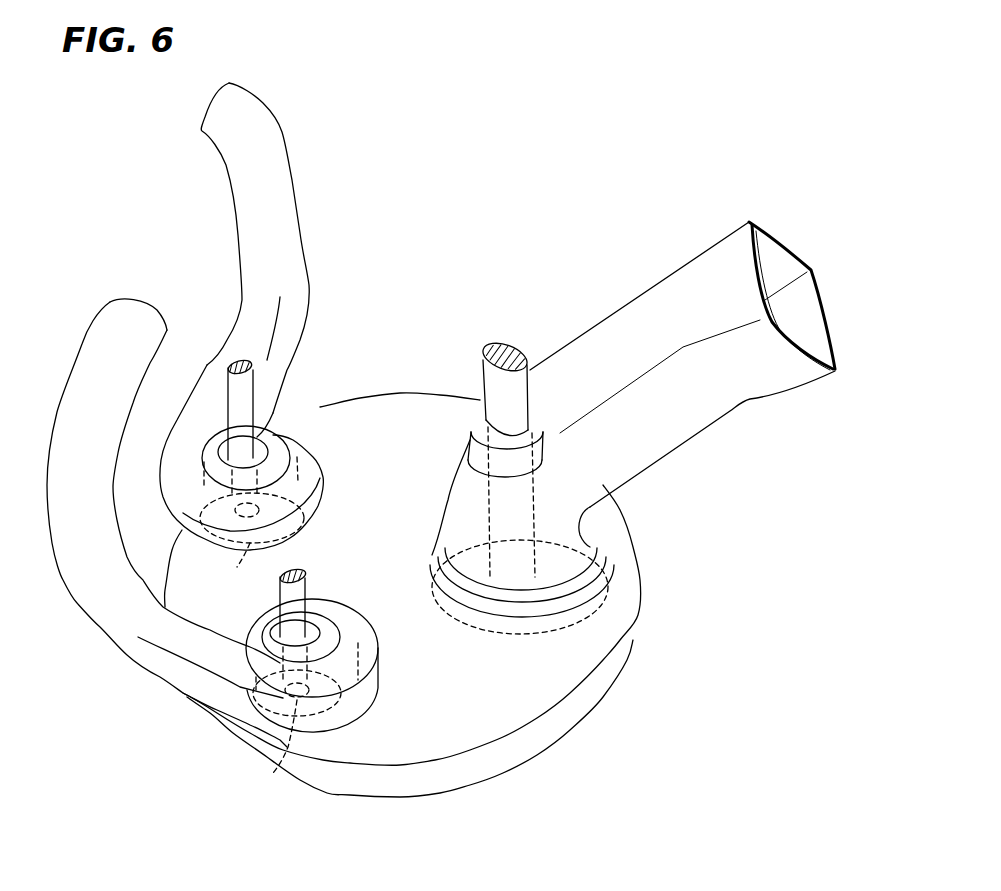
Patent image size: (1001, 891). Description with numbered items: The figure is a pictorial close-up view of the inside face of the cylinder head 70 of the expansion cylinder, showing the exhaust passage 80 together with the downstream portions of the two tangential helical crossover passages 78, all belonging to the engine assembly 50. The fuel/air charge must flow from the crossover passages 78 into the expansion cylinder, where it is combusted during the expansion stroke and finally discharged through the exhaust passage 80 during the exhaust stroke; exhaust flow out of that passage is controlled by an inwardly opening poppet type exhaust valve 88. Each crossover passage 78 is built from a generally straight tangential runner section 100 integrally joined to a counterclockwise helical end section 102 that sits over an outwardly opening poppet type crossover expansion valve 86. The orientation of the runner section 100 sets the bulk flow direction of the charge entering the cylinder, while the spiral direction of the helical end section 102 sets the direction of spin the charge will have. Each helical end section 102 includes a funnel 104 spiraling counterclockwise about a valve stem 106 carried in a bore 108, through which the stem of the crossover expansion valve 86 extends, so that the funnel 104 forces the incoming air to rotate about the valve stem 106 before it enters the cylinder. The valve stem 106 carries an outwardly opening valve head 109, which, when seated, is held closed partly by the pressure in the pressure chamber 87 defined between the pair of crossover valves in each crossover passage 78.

The fluid delivery assembly 50 is at (408, 334).
The cylinder head 70 is at (550, 738).
The crossover passage 78 is at (296, 188).
The exhaust passage 80 is at (805, 307).
The crossover expansion valve 86 is at (248, 433).
The pressure chamber 87 is at (311, 640).
The exhaust valve 88 is at (510, 347).
The runner section 100 is at (208, 367).
The helical end section 102 is at (327, 460).
The funnel 104 is at (322, 498).
The valve stem 106 is at (257, 423).
The bore 108 is at (258, 437).
The valve head 109 is at (237, 567).